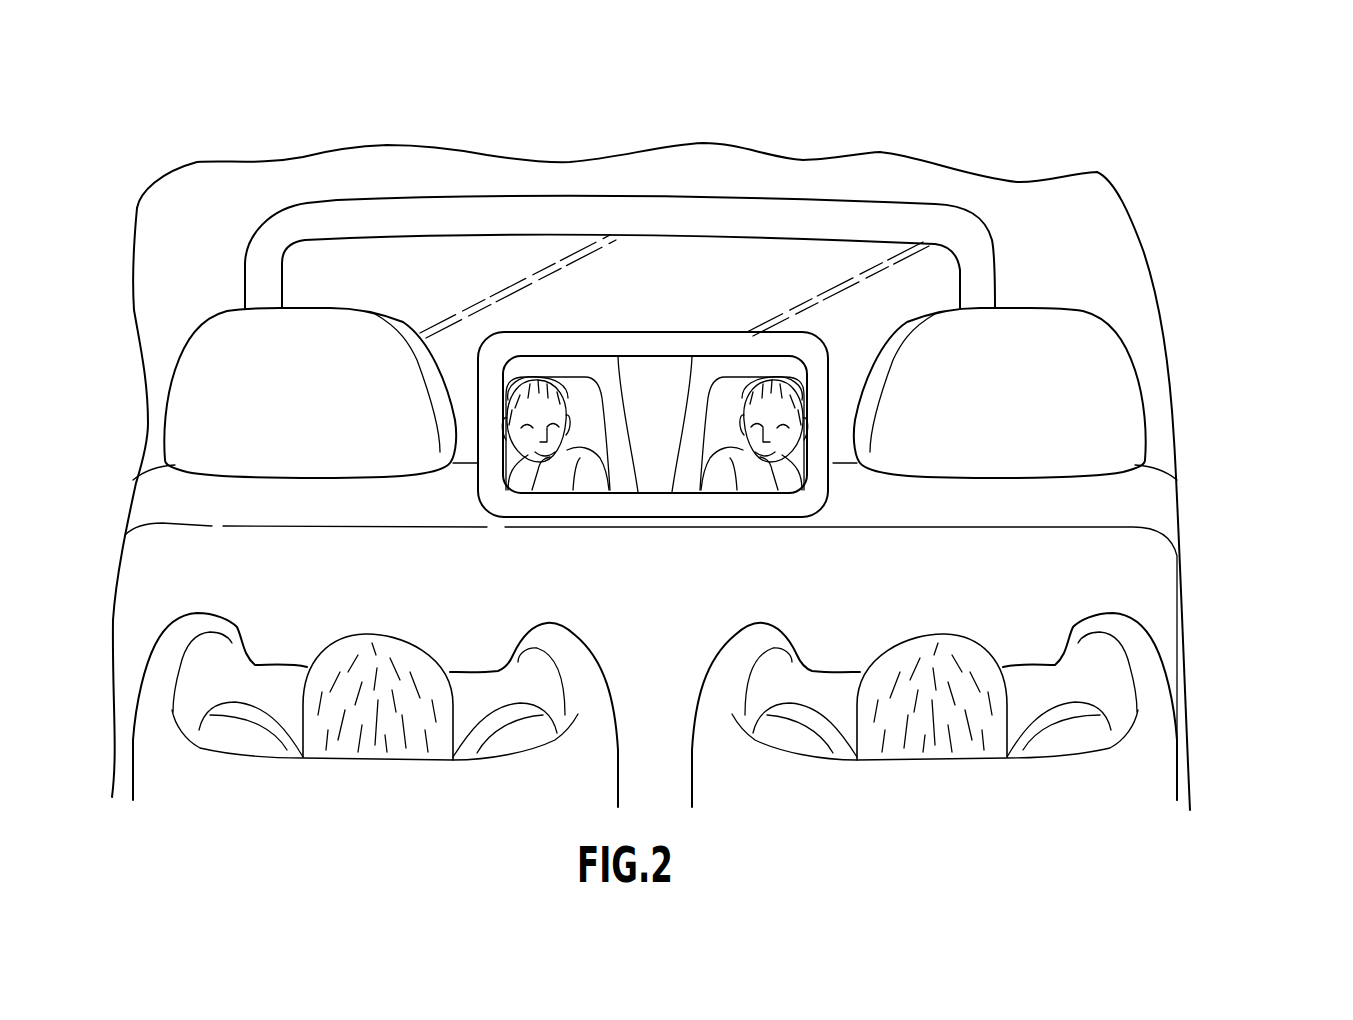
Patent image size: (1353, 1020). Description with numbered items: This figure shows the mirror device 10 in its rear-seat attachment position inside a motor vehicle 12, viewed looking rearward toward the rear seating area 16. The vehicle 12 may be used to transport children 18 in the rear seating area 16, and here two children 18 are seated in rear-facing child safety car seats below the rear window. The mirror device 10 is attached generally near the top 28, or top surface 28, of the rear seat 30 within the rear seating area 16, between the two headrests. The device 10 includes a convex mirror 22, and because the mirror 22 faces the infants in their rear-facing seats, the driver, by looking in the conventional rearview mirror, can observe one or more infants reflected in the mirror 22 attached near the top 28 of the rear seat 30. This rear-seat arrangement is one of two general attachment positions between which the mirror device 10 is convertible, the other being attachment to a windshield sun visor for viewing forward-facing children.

The mirror device 10 is at (720, 293).
The motor vehicle 12 is at (1219, 629).
The rear seating area 16 is at (1228, 527).
The children 18 is at (397, 642).
The convex mirror 22 is at (654, 373).
The top of rear seat 28 is at (903, 492).
The rear seat 30 is at (948, 570).